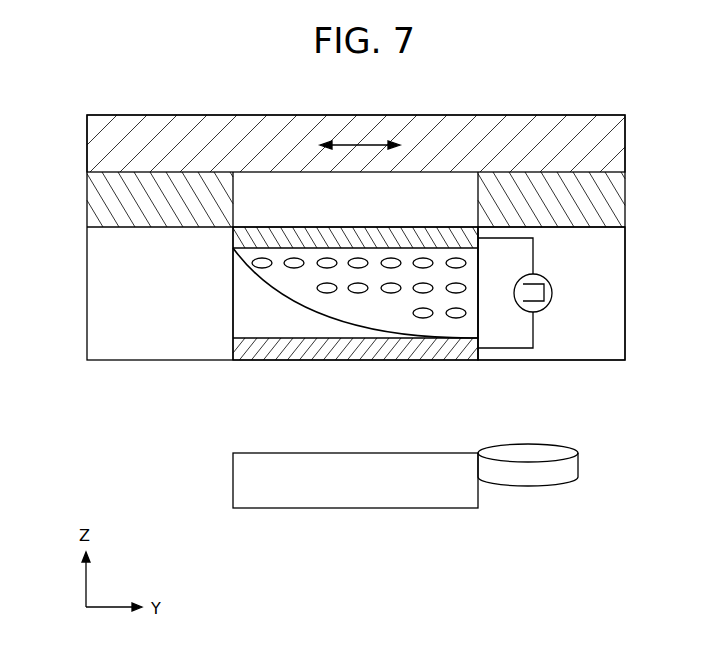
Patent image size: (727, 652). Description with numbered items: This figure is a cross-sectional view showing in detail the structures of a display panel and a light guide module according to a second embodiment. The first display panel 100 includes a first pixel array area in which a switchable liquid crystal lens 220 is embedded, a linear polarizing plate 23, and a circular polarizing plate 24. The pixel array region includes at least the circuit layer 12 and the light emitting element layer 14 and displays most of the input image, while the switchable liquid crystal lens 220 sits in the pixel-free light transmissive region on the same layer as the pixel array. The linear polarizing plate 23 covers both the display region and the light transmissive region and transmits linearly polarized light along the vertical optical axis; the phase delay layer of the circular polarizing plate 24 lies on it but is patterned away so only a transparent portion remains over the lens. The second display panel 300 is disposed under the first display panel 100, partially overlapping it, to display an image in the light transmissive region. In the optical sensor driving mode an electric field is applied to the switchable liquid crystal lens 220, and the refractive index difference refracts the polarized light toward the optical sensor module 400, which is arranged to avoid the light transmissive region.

The first display panel 100 is at (77, 115).
The linear polarizing plate 23 is at (627, 143).
The circular polarizing plate 24 is at (627, 200).
The switchable liquid crystal lens 220 is at (459, 366).
The circuit layer 12 is at (627, 300).
The light emitting element layer 14 is at (515, 293).
The second display panel 300 is at (230, 480).
The optical sensor module 400 is at (580, 462).